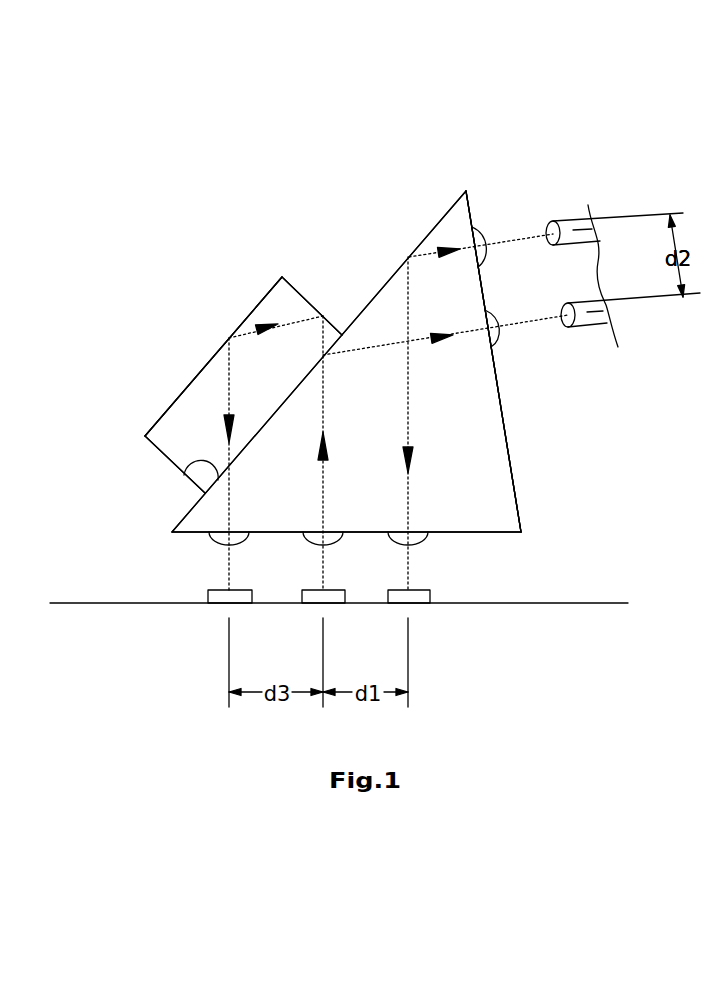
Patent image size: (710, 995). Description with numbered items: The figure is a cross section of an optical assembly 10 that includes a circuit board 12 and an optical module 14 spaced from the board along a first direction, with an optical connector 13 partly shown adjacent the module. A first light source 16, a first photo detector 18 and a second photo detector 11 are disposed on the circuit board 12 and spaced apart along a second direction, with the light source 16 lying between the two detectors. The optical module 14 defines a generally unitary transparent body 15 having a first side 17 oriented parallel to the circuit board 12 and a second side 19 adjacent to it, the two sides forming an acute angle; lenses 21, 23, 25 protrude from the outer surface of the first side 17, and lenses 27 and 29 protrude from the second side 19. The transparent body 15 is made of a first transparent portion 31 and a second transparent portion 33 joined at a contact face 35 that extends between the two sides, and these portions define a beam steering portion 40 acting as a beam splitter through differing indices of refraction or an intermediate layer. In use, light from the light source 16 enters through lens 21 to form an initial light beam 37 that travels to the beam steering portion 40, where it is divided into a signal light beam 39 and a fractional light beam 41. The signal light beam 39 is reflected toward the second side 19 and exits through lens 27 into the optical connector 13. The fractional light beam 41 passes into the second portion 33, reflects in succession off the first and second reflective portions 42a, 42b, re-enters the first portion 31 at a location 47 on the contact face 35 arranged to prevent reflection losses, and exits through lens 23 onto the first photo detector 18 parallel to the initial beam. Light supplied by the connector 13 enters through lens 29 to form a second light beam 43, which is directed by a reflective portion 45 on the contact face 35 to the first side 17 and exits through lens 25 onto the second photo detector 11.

The optical assembly 10 is at (270, 225).
The second photo detector 11 is at (420, 598).
The circuit board 12 is at (588, 603).
The optical connector 13 is at (593, 333).
The optical module 14 is at (533, 522).
The transparent body 15 is at (515, 491).
The first light source 16 is at (317, 598).
The first side 17 is at (487, 535).
The first photo detector 18 is at (222, 593).
The second side 19 is at (509, 454).
The lens 21 is at (332, 545).
The lens 23 is at (222, 543).
The lens 25 is at (418, 542).
The lens 27 is at (492, 340).
The lens 29 is at (481, 252).
The first transparent portion 31 is at (493, 437).
The second transparent portion 33 is at (193, 403).
The contact face 35 is at (185, 481).
The initial light beam 37 is at (323, 408).
The signal light beam 39 is at (377, 349).
The beam steering portion 40 is at (282, 405).
The fractional light beam 41 is at (222, 368).
The first reflective portion 42a is at (324, 312).
The second reflective portion 42b is at (228, 336).
The second light beam 43 is at (430, 253).
The reflective portion 45 is at (408, 255).
The location 47 is at (231, 466).